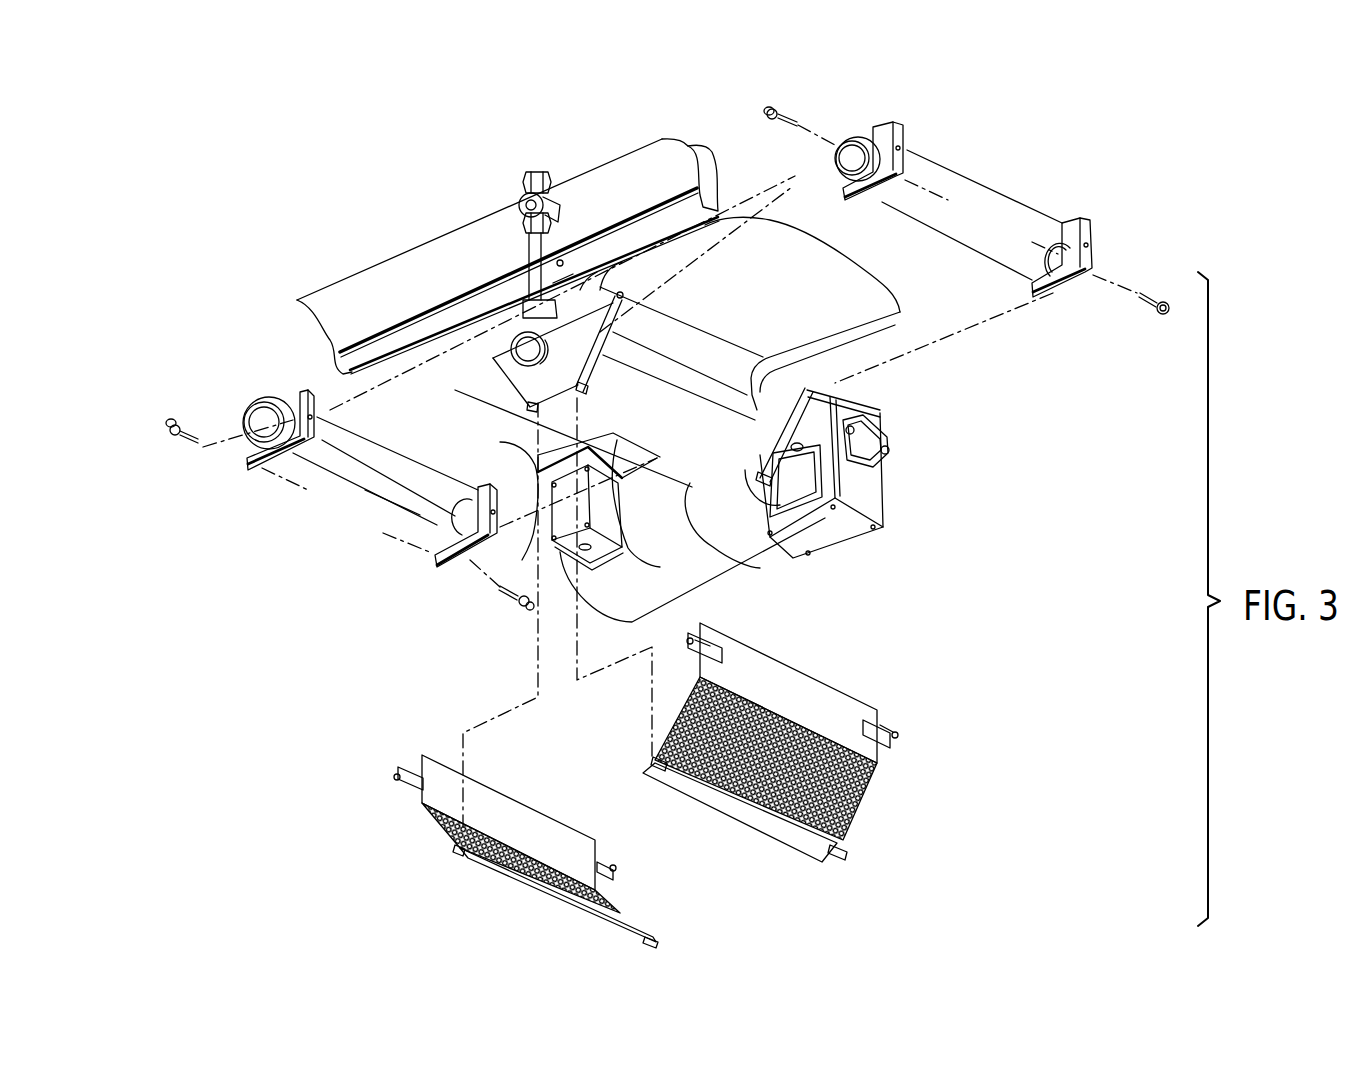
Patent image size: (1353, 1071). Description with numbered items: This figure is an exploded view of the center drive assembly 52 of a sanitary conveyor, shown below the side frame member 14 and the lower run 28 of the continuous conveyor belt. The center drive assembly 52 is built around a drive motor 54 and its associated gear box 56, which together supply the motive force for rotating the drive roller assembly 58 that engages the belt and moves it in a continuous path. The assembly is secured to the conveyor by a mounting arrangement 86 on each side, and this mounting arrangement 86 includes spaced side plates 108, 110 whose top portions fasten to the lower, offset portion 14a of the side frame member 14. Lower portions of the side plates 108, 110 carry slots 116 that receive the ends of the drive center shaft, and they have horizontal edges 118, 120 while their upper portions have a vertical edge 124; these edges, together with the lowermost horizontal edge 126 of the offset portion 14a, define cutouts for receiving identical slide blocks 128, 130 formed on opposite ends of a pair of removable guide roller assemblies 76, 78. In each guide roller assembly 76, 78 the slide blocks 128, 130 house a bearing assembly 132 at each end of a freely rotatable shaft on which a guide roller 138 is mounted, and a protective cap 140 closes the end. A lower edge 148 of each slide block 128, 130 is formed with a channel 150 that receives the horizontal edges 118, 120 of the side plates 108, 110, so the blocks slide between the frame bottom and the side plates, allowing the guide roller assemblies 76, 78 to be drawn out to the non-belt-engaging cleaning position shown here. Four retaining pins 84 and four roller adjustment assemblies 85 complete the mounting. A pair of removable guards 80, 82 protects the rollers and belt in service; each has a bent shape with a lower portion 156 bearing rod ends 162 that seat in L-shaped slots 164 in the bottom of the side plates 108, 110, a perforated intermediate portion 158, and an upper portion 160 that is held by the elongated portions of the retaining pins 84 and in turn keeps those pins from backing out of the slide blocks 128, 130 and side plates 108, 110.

The side frame member 14 is at (620, 162).
The lower offset portion of the side frame member 14a is at (683, 157).
The lower run of the conveyor belt 28 is at (793, 268).
The center drive assembly 52 is at (420, 657).
The drive motor 54 is at (693, 583).
The gear box 56 is at (871, 497).
The drive roller assembly 58 is at (783, 490).
The guide roller assembly 76 is at (347, 500).
The guide roller assembly 78 is at (995, 185).
The removable guard 80 is at (658, 793).
The removable guard 82 is at (885, 756).
The retaining pin 84 is at (182, 436).
The roller adjustment assembly 85 is at (170, 423).
The mounting arrangement 86 is at (520, 253).
The side plate 108 is at (513, 380).
The side plate 110 is at (785, 403).
The slot 116 is at (537, 445).
The horizontal edge of side plate 118 is at (467, 340).
The horizontal edge of side plate 120 is at (620, 263).
The vertical edge of side plate 124 is at (583, 280).
The lowermost horizontal edge of the offset portion 126 is at (703, 212).
The slide block 128 is at (300, 392).
The slide block 130 is at (473, 560).
The bearing assembly 132 is at (268, 397).
The guide roller 138 is at (383, 508).
The protective cap 140 is at (253, 403).
The lower edge of slide block 148 is at (437, 568).
The channel 150 is at (255, 468).
The lower portion of guard 156 is at (730, 813).
The intermediate portion of guard 158 is at (857, 803).
The upper portion of guard 160 is at (805, 682).
The rod end 162 is at (653, 757).
The L-shaped slot 164 is at (530, 407).